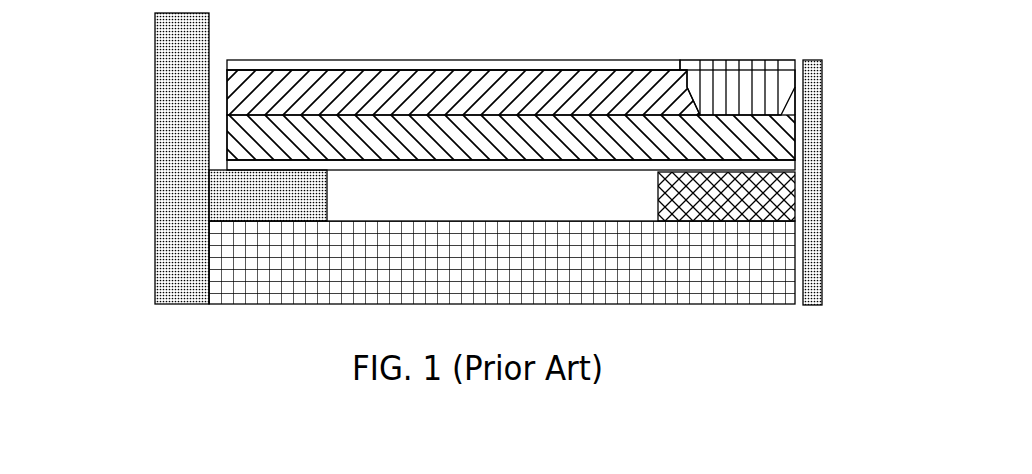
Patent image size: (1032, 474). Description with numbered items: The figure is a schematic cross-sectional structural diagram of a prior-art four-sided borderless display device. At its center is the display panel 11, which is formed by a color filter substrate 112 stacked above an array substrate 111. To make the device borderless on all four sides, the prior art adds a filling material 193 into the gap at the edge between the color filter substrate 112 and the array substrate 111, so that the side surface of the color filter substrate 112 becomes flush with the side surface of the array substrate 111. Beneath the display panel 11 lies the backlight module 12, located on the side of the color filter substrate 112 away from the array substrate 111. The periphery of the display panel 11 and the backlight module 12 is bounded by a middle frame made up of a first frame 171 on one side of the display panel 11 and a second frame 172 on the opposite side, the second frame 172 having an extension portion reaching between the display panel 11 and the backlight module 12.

The display panel 11 is at (75, 94).
The array substrate 111 is at (243, 148).
The color filter substrate 112 is at (243, 98).
The backlight module 12 is at (762, 270).
The first frame 171 is at (818, 72).
The second frame 172 is at (188, 252).
The filling material 193 is at (718, 67).